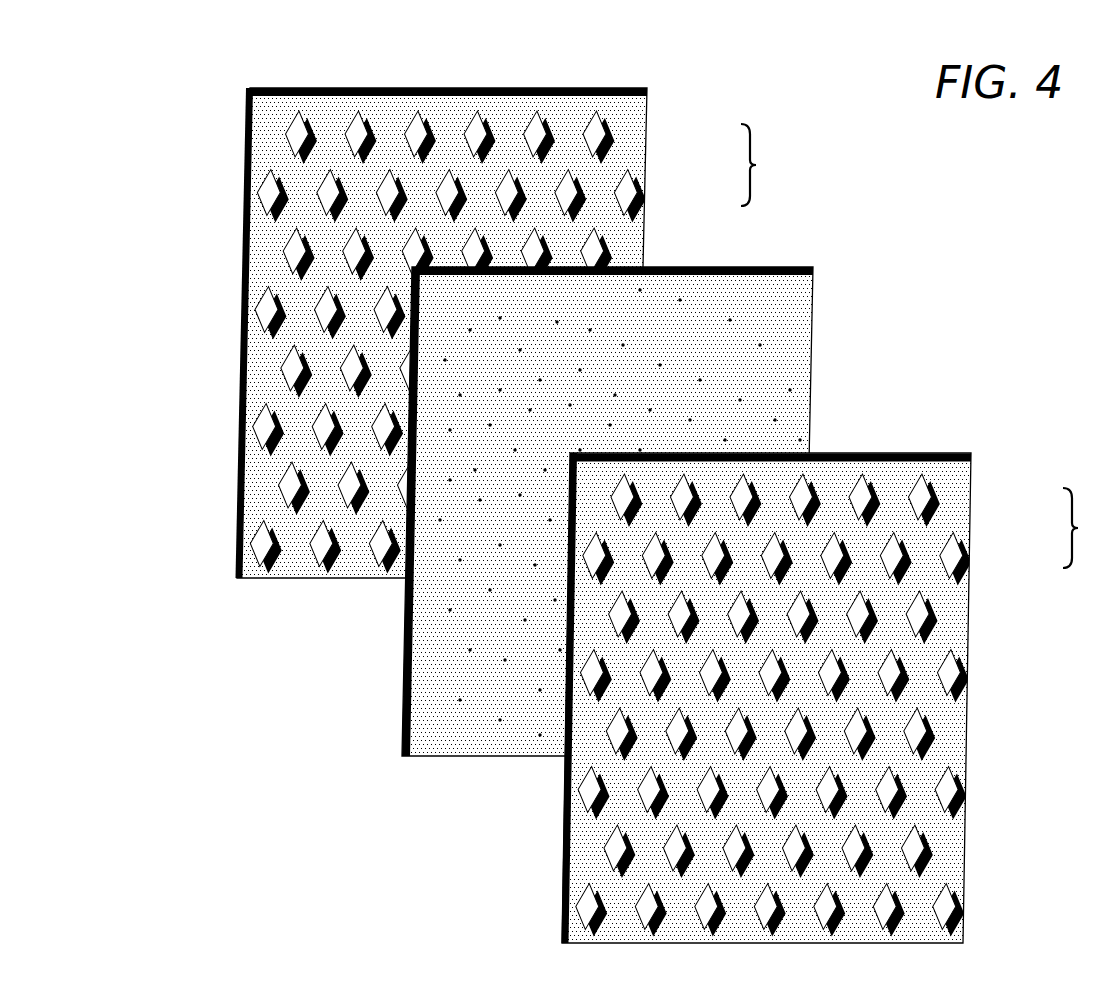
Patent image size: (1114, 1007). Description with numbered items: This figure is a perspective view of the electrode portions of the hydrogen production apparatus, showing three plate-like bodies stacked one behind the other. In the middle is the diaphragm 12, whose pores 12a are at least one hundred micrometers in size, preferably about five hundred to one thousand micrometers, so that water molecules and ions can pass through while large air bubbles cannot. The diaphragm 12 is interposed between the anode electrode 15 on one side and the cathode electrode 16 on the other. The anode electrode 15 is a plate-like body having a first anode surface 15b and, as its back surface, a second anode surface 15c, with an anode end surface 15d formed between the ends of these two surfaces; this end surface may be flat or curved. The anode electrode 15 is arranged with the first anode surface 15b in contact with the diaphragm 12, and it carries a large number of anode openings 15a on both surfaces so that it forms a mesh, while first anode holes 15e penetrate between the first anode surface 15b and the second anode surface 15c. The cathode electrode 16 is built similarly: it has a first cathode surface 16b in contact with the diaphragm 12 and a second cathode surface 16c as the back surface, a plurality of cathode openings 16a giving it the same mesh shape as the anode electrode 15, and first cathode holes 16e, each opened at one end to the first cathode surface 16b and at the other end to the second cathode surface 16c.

The diaphragm 12 is at (838, 245).
The pores 12a is at (779, 369).
The anode electrode 15 is at (626, 64).
The anode openings 15a is at (650, 170).
The first anode surface 15b is at (272, 152).
The second anode surface 15c is at (246, 110).
The anode end surface 15d is at (574, 88).
The first anode holes 15e is at (765, 165).
The cathode electrode 16 is at (976, 428).
The cathode openings 16a is at (972, 533).
The first cathode surface 16b is at (560, 822).
The second cathode surface 16c is at (595, 850).
The first cathode holes 16e is at (1088, 528).